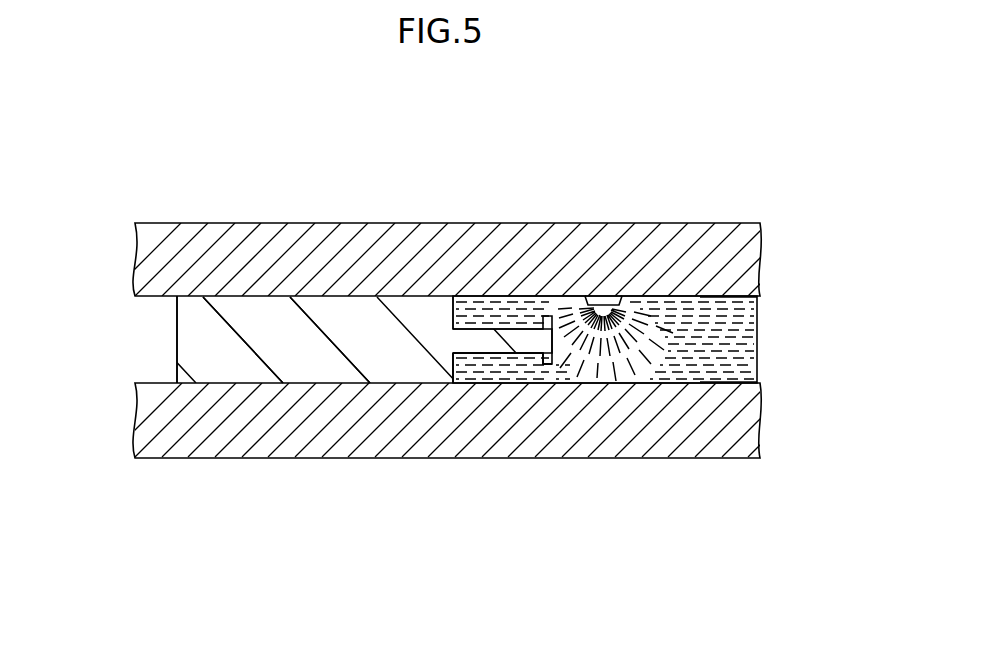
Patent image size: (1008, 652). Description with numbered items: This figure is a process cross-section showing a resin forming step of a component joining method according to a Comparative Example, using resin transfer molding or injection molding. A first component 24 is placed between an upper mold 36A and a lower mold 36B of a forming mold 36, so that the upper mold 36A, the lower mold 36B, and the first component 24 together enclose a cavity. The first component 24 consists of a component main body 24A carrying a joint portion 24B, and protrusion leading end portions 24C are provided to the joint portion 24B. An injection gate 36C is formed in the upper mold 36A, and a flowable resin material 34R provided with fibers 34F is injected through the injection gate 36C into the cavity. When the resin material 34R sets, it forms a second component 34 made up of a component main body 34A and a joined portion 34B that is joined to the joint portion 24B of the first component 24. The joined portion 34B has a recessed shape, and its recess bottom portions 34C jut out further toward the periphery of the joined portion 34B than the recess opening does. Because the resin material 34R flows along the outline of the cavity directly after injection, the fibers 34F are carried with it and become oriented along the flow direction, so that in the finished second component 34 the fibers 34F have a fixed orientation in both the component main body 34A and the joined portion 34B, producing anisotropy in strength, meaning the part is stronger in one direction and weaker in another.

The first component 24 is at (176, 337).
The component main body 24A is at (353, 312).
The joint portion 24B is at (502, 330).
The protrusion leading end portions 24C is at (548, 328).
The second component 34 is at (773, 333).
The component main body 34A is at (676, 358).
The joined portion 34B is at (494, 353).
The recess bottom portions 34C is at (533, 364).
The fibers 34F is at (737, 315).
The resin material 34R is at (740, 372).
The forming mold 36 is at (181, 563).
The upper mold 36A is at (283, 265).
The lower mold 36B is at (328, 433).
The injection gate 36C is at (605, 298).